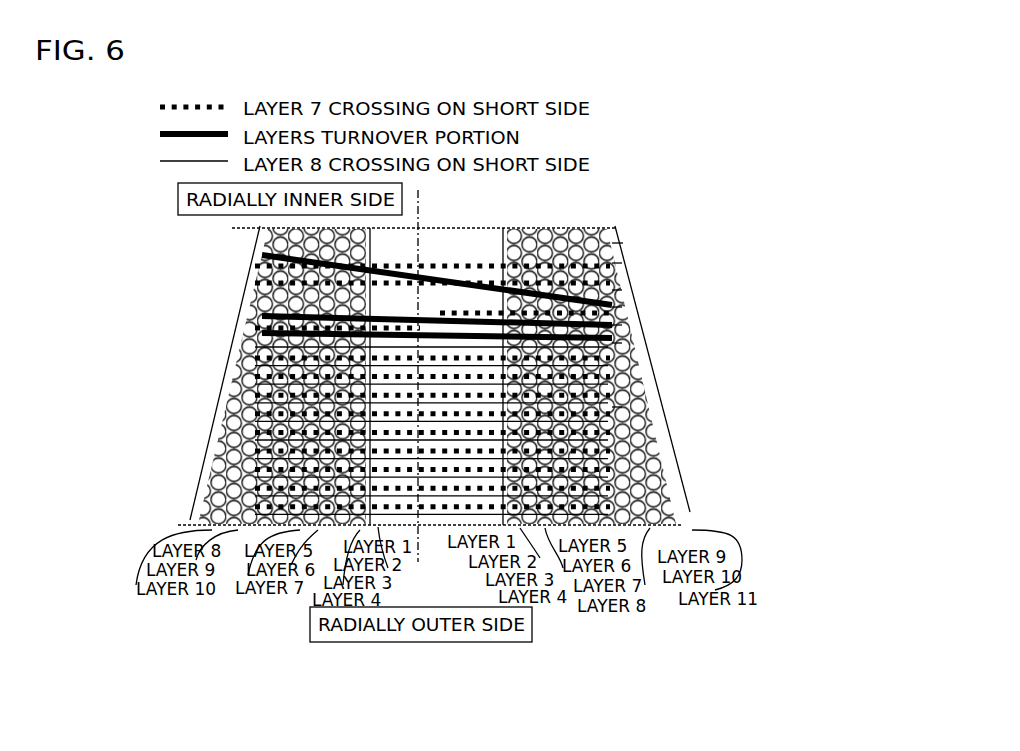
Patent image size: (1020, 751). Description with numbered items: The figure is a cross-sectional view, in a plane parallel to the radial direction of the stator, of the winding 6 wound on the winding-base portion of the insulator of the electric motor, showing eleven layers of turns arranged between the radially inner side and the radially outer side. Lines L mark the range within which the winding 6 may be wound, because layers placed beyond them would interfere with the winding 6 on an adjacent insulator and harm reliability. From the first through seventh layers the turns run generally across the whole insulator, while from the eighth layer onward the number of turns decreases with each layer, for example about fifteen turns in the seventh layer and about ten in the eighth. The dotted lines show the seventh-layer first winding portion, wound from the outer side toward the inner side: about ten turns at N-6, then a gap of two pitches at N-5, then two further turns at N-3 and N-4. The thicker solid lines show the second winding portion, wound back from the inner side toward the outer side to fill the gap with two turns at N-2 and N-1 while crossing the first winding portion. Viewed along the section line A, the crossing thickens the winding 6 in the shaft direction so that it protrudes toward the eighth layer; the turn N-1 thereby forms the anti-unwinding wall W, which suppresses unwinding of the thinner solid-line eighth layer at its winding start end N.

The anti-unwinding wall W is at (420, 312).
The winding 6 is at (584, 227).
The winding start end of the eighth layer N is at (620, 343).
The gap filling turn N-1 is at (620, 325).
The gap filling turn N-2 is at (620, 307).
The gap forming turn N-3 is at (623, 243).
The gap forming turn N-4 is at (620, 263).
The gap N-5 is at (620, 290).
The gap forming turns N-6 is at (620, 407).
The lines L is at (198, 462).
The line A-A' A is at (431, 201).